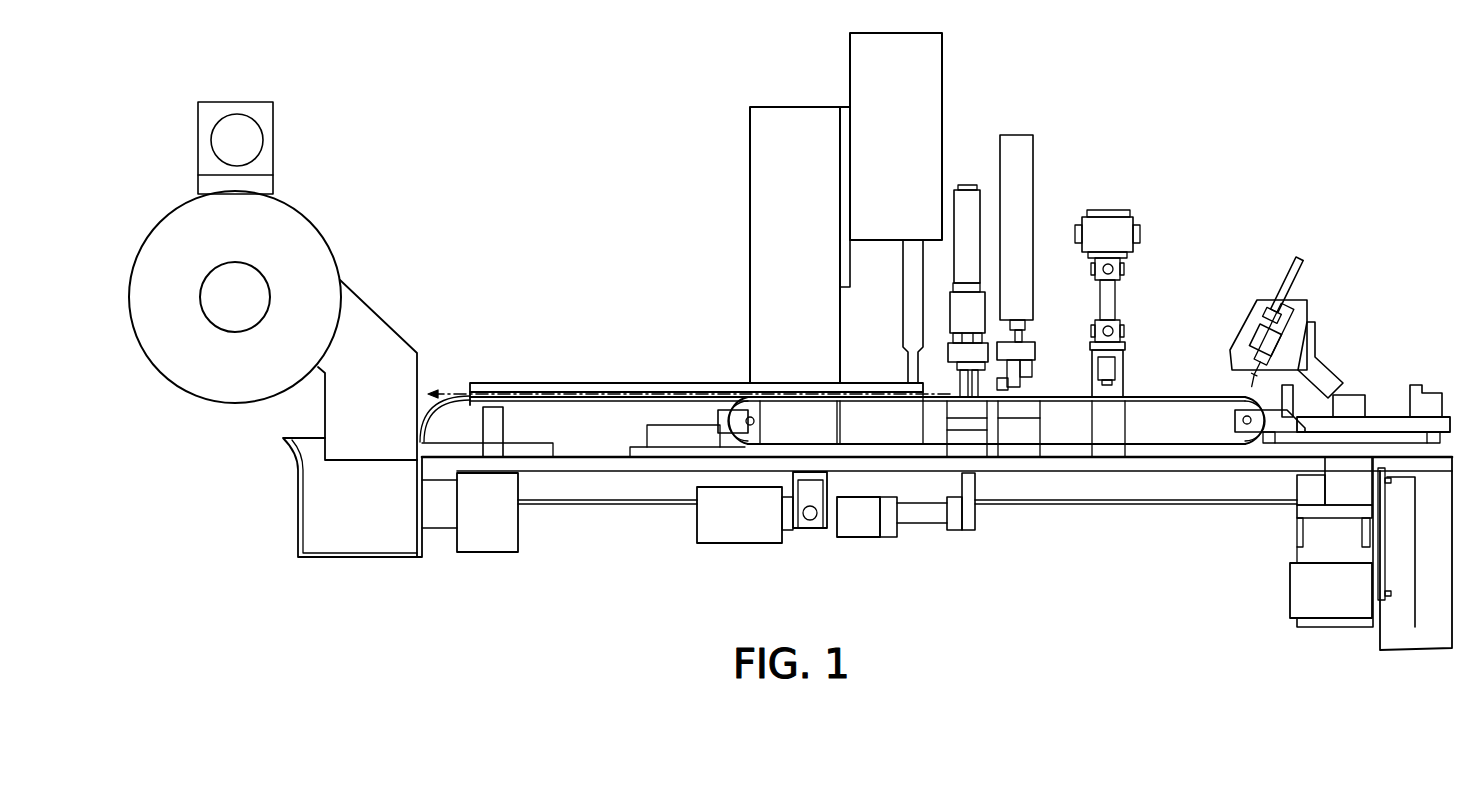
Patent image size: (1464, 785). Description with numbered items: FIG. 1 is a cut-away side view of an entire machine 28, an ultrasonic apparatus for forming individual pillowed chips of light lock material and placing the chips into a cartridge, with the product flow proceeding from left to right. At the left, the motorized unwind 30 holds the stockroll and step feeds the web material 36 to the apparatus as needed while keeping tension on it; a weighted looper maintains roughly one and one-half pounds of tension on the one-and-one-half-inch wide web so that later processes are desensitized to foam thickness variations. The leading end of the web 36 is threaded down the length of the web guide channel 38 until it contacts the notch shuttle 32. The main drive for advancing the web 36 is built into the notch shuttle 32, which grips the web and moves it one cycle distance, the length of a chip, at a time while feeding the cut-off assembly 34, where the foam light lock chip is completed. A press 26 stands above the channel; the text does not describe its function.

The stamping press 26 is at (922, 65).
The machine 28 is at (549, 128).
The unwind 30 is at (302, 236).
The notch shuttle 32 is at (965, 208).
The cut-off assembly 34 is at (1013, 167).
The web material 36 is at (447, 386).
The web guide channel 38 is at (496, 385).